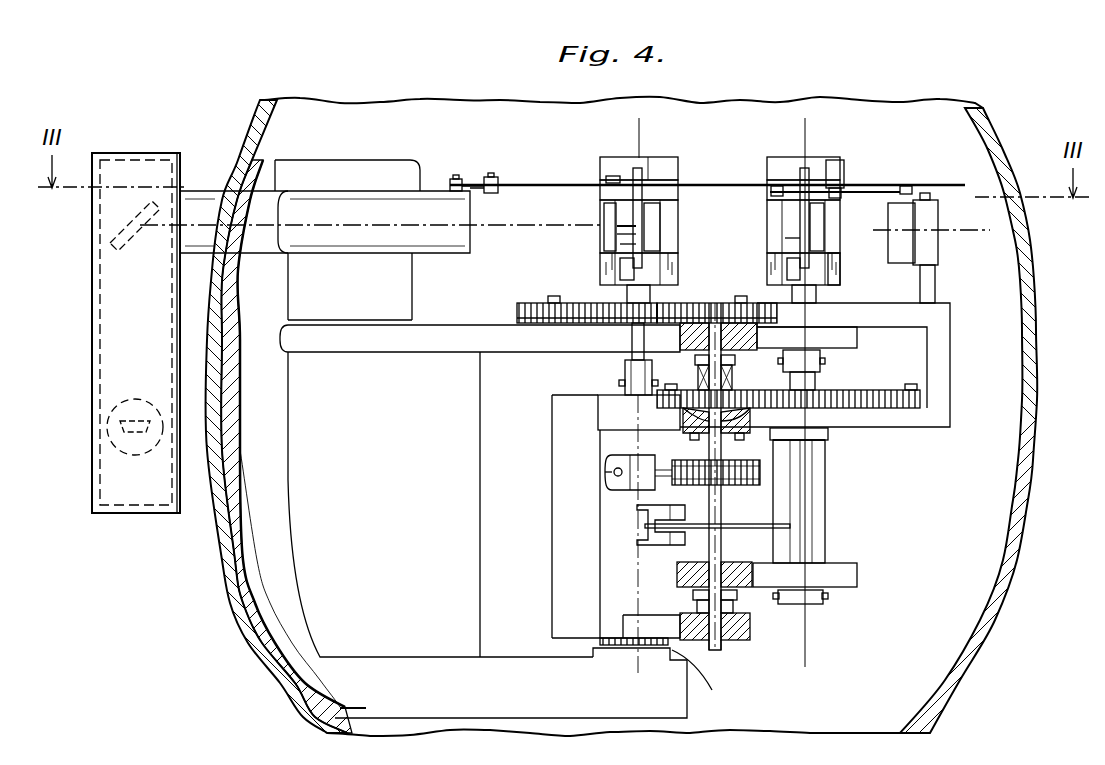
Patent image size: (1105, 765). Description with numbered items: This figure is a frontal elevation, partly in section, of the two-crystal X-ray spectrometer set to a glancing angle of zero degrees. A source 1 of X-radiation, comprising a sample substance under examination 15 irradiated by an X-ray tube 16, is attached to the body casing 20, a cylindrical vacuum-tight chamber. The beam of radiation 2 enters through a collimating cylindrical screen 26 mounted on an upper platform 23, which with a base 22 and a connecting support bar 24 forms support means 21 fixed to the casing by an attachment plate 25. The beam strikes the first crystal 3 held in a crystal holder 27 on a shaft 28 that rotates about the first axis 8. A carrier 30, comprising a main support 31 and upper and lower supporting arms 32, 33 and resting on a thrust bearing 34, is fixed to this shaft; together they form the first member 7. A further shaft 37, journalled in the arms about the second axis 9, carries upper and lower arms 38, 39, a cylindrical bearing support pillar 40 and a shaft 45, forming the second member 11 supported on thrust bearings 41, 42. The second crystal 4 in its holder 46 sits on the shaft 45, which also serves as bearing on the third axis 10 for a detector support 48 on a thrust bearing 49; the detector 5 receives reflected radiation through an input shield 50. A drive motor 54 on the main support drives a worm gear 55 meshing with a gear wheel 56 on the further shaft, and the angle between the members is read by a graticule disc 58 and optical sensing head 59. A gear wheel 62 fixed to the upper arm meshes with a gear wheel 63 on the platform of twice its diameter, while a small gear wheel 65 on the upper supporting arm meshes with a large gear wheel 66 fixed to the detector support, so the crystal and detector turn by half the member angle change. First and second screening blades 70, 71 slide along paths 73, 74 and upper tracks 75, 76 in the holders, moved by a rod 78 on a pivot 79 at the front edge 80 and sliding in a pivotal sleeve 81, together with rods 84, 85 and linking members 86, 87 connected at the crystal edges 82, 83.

The source 1 is at (143, 160).
The beam of radiation 2 is at (378, 190).
The first crystal 3 is at (604, 212).
The second crystal 4 is at (824, 222).
The detector 5 is at (937, 250).
The first member 7 is at (660, 590).
The first axis 8 is at (632, 157).
The second axis 9 is at (719, 300).
The third axis 10 is at (800, 157).
The second member 11 is at (818, 497).
The sample substance under examination 15 is at (122, 248).
The X-ray tube 16 is at (108, 418).
The body casing 20 is at (236, 572).
The support means 21 is at (372, 483).
The base 22 is at (338, 693).
The upper platform 23 is at (338, 338).
The connecting support bar 24 is at (300, 622).
The attachment plate 25 is at (243, 605).
The collimating cylindrical screen 26 is at (330, 190).
The crystal holder 27 is at (628, 236).
The shaft 28 is at (627, 296).
The carrier 30 is at (565, 398).
The main support 31 is at (552, 578).
The upper supporting arm 32 is at (598, 420).
The lower supporting arm 33 is at (650, 622).
The thrust bearing 34 is at (712, 690).
The further shaft 37 is at (722, 650).
The upper arm 38 is at (857, 342).
The lower arm 39 is at (858, 578).
The cylindrical bearing support pillar 40 is at (826, 545).
The thrust bearing 41 is at (735, 372).
The thrust bearing 42 is at (780, 610).
The shaft 45 is at (822, 380).
The holder 46 is at (840, 274).
The detector support 48 is at (950, 322).
The thrust bearing 49 is at (826, 438).
The input shield 50 is at (915, 215).
The drive motor 54 is at (612, 488).
The worm gear 55 is at (665, 462).
The gear wheel 56 is at (790, 470).
The graticule disc 58 is at (790, 526).
The optical sensing head 59 is at (637, 540).
The gear wheel 62 is at (687, 303).
The gear wheel 63 is at (517, 308).
The small gear wheel 65 is at (625, 374).
The large gear wheel 66 is at (910, 392).
The first screening blade 70 is at (630, 228).
The second screening blade 71 is at (812, 242).
The path 73 is at (626, 272).
The path 74 is at (792, 268).
The upper track 75 is at (642, 172).
The upper track 76 is at (812, 172).
The rod 78 is at (700, 183).
The pivot 79 is at (612, 176).
The front edge 80 is at (628, 246).
The pivotal sleeve 81 is at (844, 175).
The edge 82 is at (660, 220).
The edge 83 is at (776, 196).
The rod 84 is at (495, 177).
The rod 85 is at (885, 190).
The linking member 86 is at (456, 178).
The linking member 87 is at (912, 188).